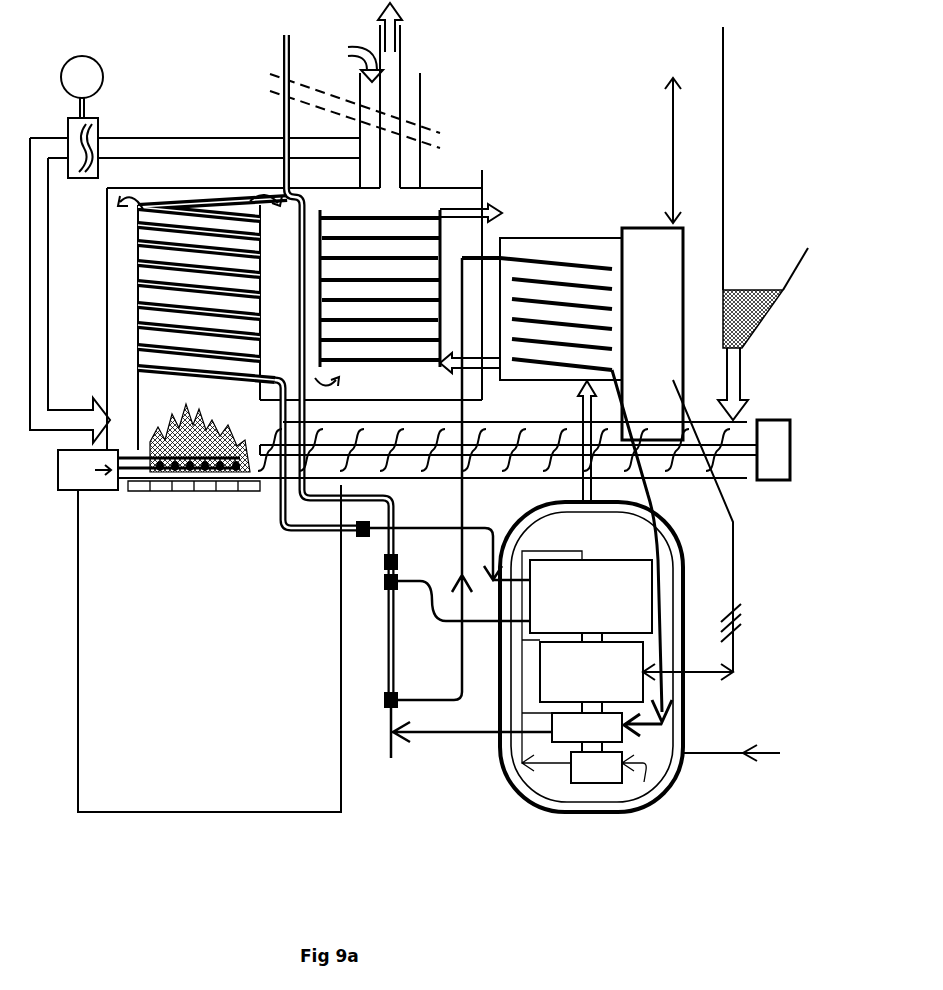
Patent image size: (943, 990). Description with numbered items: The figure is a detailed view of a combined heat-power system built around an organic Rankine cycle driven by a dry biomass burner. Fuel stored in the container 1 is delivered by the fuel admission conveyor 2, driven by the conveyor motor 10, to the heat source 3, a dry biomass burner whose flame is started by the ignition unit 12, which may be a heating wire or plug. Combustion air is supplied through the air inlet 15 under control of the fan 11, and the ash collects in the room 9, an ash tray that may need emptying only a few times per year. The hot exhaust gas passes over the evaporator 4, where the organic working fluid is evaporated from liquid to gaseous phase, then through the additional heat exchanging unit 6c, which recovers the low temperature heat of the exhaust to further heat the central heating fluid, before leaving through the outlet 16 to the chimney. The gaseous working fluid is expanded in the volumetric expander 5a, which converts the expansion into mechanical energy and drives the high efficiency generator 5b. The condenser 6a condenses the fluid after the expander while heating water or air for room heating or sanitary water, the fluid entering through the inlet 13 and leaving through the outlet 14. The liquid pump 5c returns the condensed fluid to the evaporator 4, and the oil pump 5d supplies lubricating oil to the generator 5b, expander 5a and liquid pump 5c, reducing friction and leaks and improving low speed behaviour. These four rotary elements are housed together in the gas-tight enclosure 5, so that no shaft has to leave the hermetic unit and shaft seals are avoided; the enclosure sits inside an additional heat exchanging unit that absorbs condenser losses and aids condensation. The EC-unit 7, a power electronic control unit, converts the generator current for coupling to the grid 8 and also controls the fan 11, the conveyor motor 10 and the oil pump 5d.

The container 1 is at (763, 223).
The fuel admission conveyor 2 is at (507, 436).
The heat source 3 is at (200, 436).
The evaporator 4 is at (197, 319).
The gas-tight enclosure 5 is at (616, 657).
The expander 5a is at (591, 596).
The generator 5b is at (591, 672).
The liquid pump 5c is at (587, 727).
The oil pump 5d is at (596, 767).
The condenser 6a is at (542, 295).
The heat exchanging unit 6c is at (408, 293).
The EC-unit 7 is at (652, 334).
The grid 8 is at (672, 136).
The room 9 is at (209, 648).
The conveyor motor 10 is at (773, 466).
The fan 11 is at (99, 113).
The ignition unit 12 is at (149, 470).
The inlet 13 is at (731, 736).
The outlet 14 is at (504, 179).
The air inlet 15 is at (347, 60).
The outlet 16 is at (407, 26).